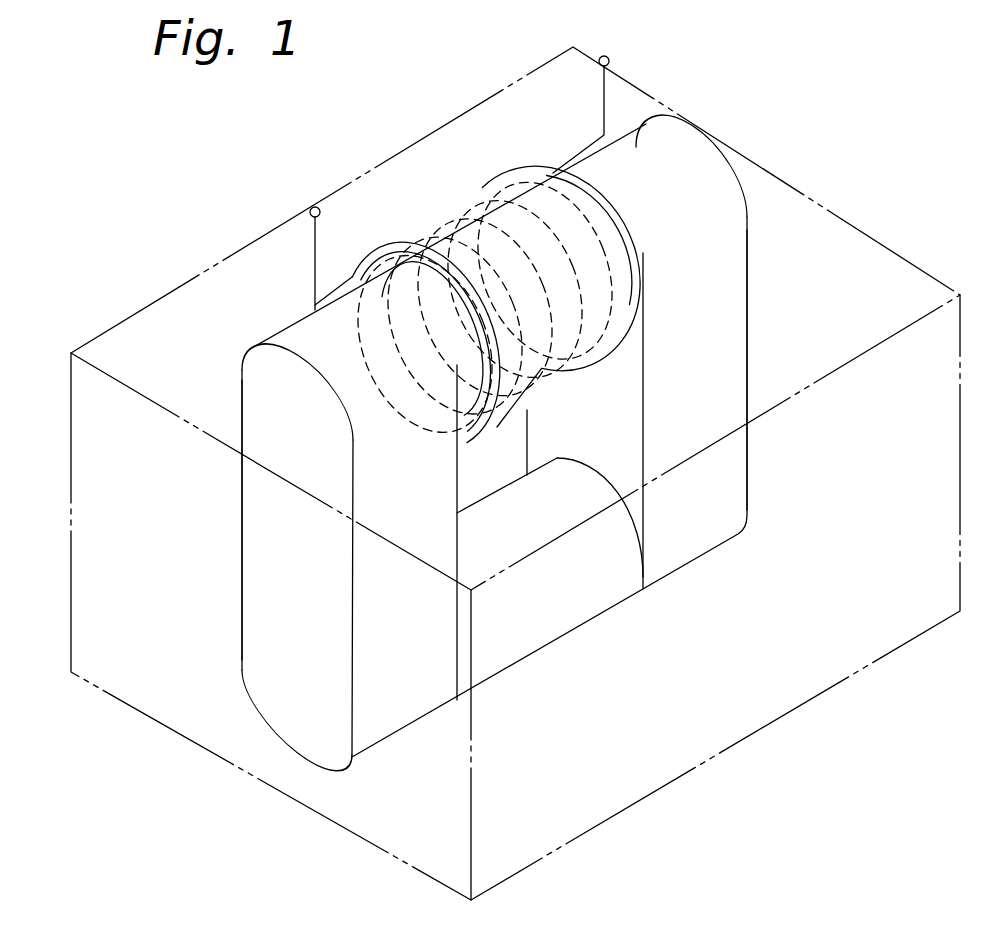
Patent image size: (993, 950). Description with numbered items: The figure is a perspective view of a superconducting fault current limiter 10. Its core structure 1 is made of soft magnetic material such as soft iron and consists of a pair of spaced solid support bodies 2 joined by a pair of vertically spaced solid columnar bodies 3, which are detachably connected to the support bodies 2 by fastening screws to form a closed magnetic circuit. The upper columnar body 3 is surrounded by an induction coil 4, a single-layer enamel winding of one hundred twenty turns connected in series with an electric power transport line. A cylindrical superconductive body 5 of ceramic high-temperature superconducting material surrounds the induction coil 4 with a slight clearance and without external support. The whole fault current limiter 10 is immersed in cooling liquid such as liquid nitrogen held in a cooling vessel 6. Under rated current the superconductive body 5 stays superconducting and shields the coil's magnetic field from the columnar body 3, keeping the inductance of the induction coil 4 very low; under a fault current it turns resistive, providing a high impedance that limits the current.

The core structure 1 is at (496, 442).
The support body 2 is at (250, 530).
The columnar body 3 is at (573, 622).
The induction coil 4 is at (433, 215).
The cylindrical superconductive body 5 is at (500, 180).
The cooling vessel 6 is at (846, 217).
The superconducting fault current limiter 10 is at (741, 134).